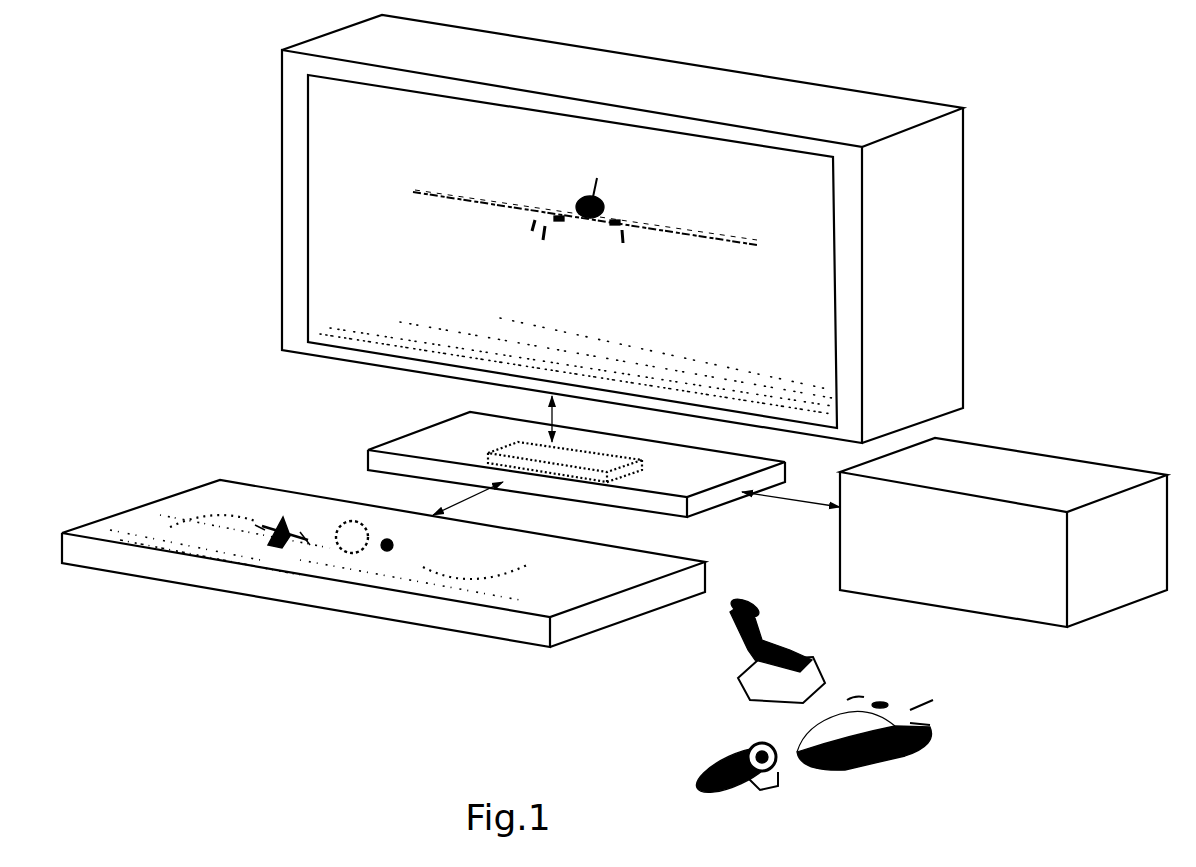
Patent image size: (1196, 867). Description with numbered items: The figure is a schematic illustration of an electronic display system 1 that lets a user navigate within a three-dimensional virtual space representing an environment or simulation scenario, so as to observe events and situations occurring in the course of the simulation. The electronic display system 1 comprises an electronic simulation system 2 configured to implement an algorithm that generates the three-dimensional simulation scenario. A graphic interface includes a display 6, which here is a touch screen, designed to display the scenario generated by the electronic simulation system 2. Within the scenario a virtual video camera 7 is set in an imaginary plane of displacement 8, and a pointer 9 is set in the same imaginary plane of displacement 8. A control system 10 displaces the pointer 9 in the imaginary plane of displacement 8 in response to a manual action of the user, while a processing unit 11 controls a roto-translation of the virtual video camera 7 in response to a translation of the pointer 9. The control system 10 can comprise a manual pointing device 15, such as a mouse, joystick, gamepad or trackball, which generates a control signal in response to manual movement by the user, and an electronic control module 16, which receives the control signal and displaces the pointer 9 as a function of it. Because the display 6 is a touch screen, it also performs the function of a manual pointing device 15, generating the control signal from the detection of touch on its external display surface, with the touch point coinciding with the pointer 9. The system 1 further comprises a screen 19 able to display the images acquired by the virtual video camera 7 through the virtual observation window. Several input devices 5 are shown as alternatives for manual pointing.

The electronic display system 1 is at (202, 342).
The electronic simulation system 2 is at (1033, 562).
The toy figure / game piece 5 is at (287, 516).
The display 6 is at (213, 505).
The virtual video camera 7 is at (343, 526).
The imaginary plane of displacement 8 is at (166, 525).
The pointer 9 is at (383, 551).
The control system 10 is at (643, 687).
The processing unit 11 is at (403, 448).
The manual pointing device 15 is at (762, 797).
The electronic control module 16 is at (512, 448).
The screen 19 is at (833, 225).